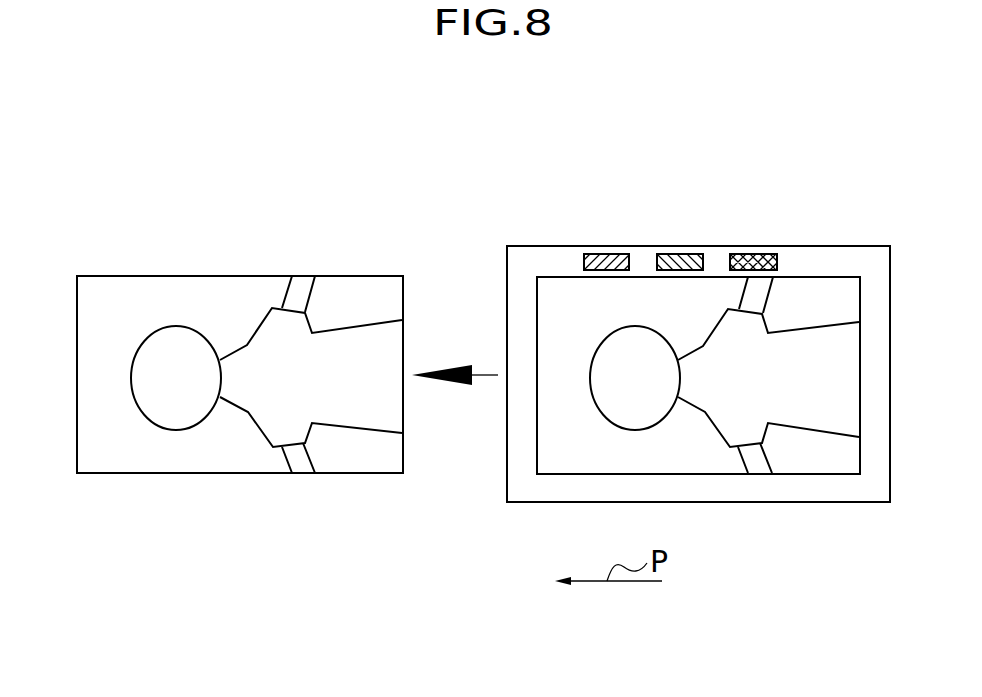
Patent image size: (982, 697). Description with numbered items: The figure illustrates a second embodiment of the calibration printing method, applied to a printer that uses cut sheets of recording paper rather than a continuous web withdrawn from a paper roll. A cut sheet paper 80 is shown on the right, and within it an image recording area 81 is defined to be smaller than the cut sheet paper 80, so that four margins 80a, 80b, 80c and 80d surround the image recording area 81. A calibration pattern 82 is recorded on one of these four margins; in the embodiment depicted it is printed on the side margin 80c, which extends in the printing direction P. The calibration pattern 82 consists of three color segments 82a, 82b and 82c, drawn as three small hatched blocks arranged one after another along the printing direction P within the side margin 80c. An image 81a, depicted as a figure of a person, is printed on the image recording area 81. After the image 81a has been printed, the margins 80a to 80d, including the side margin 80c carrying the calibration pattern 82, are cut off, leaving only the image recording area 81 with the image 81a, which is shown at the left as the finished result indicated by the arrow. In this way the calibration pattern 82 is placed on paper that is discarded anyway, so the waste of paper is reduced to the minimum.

The cut sheet paper 80 is at (714, 516).
The margin 80a is at (520, 297).
The margin 80b is at (878, 292).
The side margin 80c is at (558, 262).
The margin 80d is at (542, 488).
The image recording area 81 is at (800, 477).
The image 81a is at (848, 463).
The calibration pattern 82 is at (790, 190).
The color segment 82a is at (608, 250).
The color segment 82b is at (677, 250).
The color segment 82c is at (742, 250).